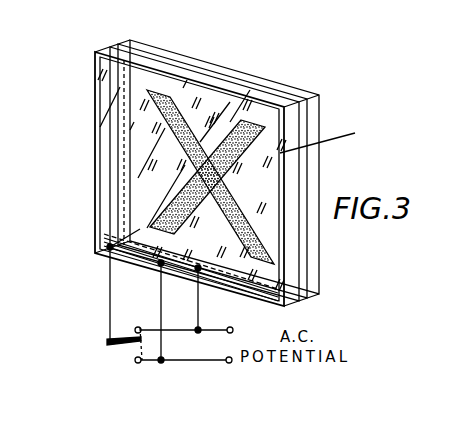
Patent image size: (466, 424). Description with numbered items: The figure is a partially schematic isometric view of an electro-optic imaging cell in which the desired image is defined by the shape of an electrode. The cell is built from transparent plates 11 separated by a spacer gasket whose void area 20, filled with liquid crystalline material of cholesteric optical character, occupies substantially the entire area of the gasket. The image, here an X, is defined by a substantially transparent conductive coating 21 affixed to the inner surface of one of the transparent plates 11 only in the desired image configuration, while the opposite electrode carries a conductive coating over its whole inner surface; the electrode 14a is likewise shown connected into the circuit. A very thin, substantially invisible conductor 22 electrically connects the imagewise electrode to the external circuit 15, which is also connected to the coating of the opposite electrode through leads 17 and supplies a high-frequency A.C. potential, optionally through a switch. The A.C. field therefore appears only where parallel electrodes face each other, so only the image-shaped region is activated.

The transparent plates 11 is at (95, 52).
The void area 20 is at (112, 102).
The substantially transparent conductive coating 21 is at (187, 150).
The transparent electrode 14a is at (205, 176).
The conductor 22 is at (123, 258).
The leads 17 is at (161, 303).
The external circuit 15 is at (192, 366).